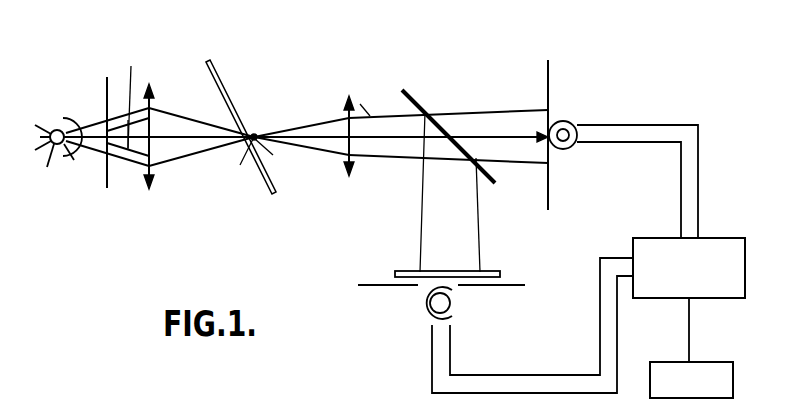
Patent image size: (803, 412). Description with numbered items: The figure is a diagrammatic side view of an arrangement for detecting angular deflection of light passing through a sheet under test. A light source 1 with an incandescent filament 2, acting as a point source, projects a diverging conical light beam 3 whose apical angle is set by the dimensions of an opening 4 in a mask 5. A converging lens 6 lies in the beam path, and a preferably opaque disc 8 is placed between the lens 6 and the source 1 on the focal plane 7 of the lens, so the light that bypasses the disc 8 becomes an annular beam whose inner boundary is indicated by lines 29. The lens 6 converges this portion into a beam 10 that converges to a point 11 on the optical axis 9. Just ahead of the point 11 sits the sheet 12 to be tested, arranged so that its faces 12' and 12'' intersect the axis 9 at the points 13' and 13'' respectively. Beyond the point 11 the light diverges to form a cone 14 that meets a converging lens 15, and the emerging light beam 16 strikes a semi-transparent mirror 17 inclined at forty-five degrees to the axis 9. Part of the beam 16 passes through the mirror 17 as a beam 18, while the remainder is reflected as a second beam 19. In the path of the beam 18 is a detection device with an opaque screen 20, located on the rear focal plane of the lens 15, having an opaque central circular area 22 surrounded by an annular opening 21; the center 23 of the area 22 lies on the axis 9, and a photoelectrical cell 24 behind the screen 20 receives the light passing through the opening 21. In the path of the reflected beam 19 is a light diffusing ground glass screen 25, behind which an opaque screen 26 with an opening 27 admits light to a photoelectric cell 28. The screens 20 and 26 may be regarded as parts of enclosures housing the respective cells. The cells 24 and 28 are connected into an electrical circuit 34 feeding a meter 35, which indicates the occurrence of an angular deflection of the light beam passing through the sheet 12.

The light source 1 is at (54, 128).
The incandescent filament 2 is at (44, 171).
The diverging conical light beam 3 is at (110, 116).
The opening 4 is at (66, 122).
The mask 5 is at (74, 160).
The converging lens 6 is at (152, 95).
The focal plane 7 is at (107, 188).
The disc 8 is at (99, 128).
The optical axis 9 is at (172, 144).
The beam 10 is at (185, 118).
The point 11 is at (257, 136).
The sheet 12 is at (241, 114).
The face 12' is at (210, 104).
The face 12'' is at (272, 79).
The point 13' is at (232, 177).
The point 13'' is at (289, 172).
The cone 14 is at (328, 120).
The converging lens 15 is at (360, 104).
The light beam 16 is at (396, 178).
The semi-transparent mirror 17 is at (425, 109).
The beam 18 is at (477, 110).
The second beam 19 is at (477, 224).
The opaque screen 20 is at (548, 73).
The annular opening 21 is at (533, 107).
The opaque central circular area 22 is at (542, 144).
The center 23 is at (527, 120).
The photoelectrical cell 24 is at (578, 144).
The light diffusing ground glass screen 25 is at (482, 272).
The opaque screen 26 is at (364, 287).
The opening 27 is at (430, 287).
The photoelectric cell 28 is at (446, 301).
The lines 29 is at (129, 120).
The electrical circuit 34 is at (669, 238).
The meter 35 is at (706, 362).